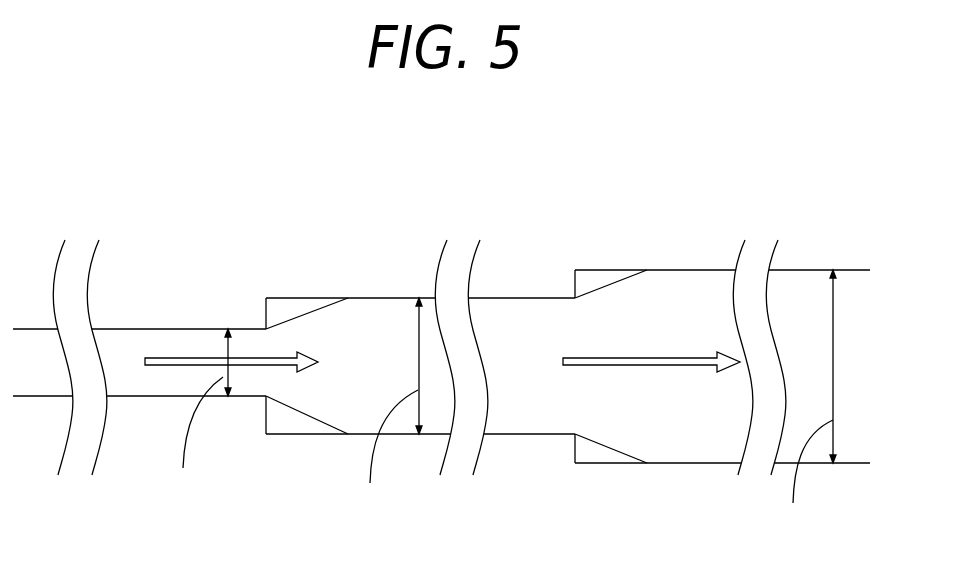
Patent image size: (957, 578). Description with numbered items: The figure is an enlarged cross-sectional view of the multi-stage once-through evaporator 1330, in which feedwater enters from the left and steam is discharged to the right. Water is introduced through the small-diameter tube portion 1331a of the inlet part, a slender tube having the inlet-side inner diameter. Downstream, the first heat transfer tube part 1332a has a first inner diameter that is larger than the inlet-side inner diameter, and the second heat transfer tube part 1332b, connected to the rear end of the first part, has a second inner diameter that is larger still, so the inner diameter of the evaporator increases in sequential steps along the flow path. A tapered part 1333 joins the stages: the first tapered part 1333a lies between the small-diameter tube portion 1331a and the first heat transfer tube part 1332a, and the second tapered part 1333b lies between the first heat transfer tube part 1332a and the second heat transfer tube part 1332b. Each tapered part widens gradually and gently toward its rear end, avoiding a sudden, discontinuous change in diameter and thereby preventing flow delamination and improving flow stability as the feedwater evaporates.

The multi-stage once-through evaporator 1330 is at (172, 118).
The small-diameter tube portion 1331a is at (127, 329).
The first heat transfer tube part 1332a is at (394, 298).
The second heat transfer tube part 1332b is at (678, 270).
The tapered part 1333 is at (528, 140).
The first tapered part 1333a is at (319, 297).
The second tapered part 1333b is at (592, 270).